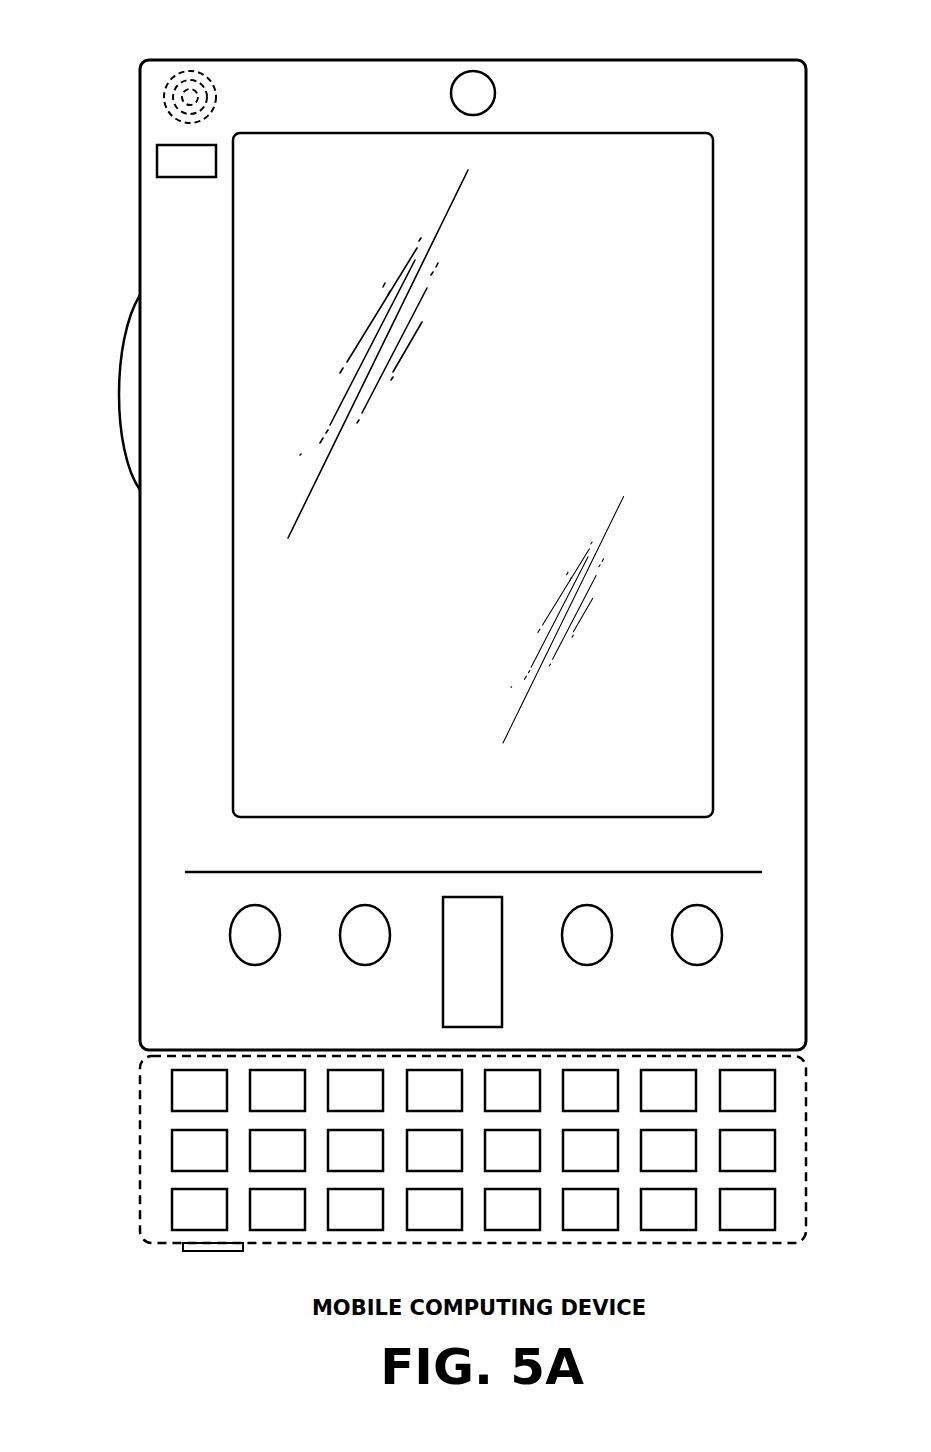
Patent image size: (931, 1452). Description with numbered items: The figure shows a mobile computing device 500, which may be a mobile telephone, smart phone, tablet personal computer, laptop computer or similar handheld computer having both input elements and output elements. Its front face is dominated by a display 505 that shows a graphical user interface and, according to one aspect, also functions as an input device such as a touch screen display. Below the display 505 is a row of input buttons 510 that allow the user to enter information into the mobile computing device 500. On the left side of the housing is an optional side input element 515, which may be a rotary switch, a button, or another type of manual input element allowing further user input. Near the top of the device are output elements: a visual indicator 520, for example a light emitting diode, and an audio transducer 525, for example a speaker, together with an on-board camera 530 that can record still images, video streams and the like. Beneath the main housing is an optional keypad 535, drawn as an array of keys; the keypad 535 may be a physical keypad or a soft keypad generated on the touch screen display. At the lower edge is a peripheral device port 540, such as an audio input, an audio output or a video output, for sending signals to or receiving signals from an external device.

The mobile computing device 500 is at (778, 60).
The display 505 is at (257, 651).
The input buttons 510 is at (255, 965).
The side input element 515 is at (118, 395).
The visual indicator 520 is at (157, 160).
The audio transducer 525 is at (164, 98).
The on-board camera 530 is at (473, 71).
The keypad 535 is at (150, 1148).
The peripheral device port 540 is at (190, 1251).